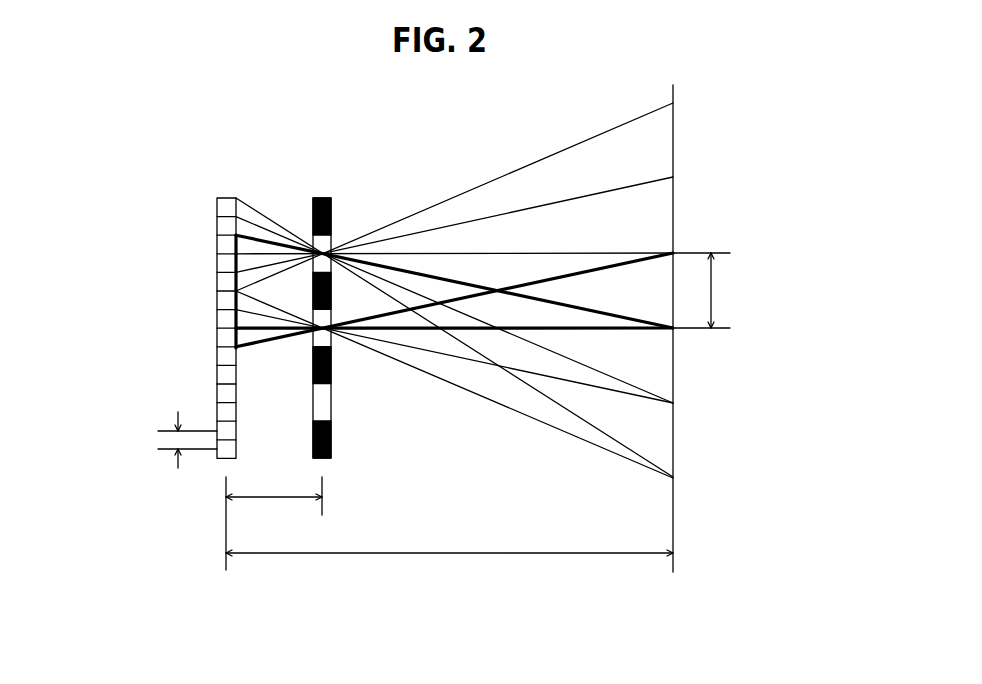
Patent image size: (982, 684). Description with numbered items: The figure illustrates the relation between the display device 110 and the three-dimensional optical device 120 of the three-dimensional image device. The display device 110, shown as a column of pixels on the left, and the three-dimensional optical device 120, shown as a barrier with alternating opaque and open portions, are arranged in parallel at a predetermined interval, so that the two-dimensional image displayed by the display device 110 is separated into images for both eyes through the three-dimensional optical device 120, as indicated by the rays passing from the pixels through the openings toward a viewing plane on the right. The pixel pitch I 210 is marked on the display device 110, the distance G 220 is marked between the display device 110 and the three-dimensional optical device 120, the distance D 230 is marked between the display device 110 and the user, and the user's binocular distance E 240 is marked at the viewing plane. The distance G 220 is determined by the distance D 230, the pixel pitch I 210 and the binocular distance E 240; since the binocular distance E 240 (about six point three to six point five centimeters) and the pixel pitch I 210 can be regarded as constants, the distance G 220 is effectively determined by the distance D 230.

The display device 110 is at (218, 198).
The three-dimensional optical device 120 is at (313, 198).
The pixel pitch I 210 is at (132, 440).
The distance G 220 is at (273, 528).
The distance D 230 is at (435, 583).
The binocular distance E 240 is at (747, 285).